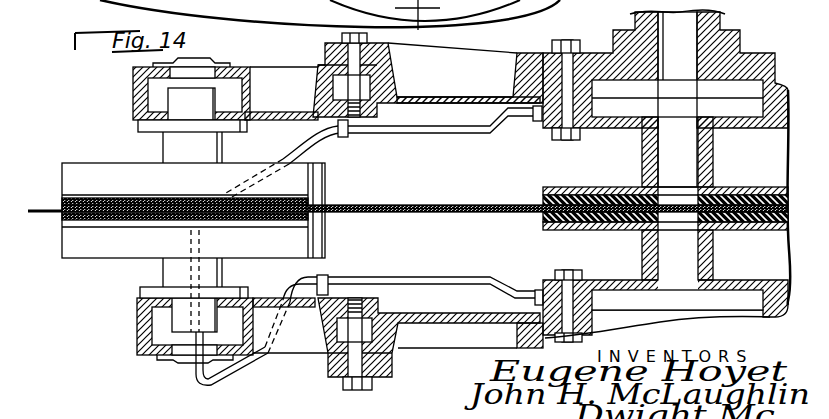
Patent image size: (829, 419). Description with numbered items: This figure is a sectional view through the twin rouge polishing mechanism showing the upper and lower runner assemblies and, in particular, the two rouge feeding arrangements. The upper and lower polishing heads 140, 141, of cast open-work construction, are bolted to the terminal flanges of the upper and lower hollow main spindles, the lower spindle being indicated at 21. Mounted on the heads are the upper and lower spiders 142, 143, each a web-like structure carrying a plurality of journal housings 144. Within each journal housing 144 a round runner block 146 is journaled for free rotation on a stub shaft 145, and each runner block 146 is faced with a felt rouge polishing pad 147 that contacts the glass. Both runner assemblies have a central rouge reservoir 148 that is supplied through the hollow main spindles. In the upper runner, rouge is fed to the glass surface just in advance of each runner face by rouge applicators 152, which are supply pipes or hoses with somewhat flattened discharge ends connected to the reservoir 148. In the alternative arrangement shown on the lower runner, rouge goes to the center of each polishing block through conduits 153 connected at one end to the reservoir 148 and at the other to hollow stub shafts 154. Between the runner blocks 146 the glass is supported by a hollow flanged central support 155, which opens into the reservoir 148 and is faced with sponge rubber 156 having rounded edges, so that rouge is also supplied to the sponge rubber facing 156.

The shaft 21 is at (720, 14).
The upper polishing head 140 is at (325, 47).
The lower polishing head 141 is at (330, 373).
The upper spider 142 is at (272, 82).
The lower spider 143 is at (297, 338).
The journal housing 144 is at (133, 94).
The stub shaft 145 is at (165, 149).
The runner block 146 is at (68, 178).
The felt rouge polishing pad 147 is at (63, 204).
The central rouge reservoir 148 is at (615, 110).
The rouge applicator 152 is at (312, 146).
The conduit 153 is at (410, 278).
The hollow stub shaft 154 is at (165, 278).
The hollow flanged central support 155 is at (644, 165).
The sponge rubber facing 156 is at (545, 192).